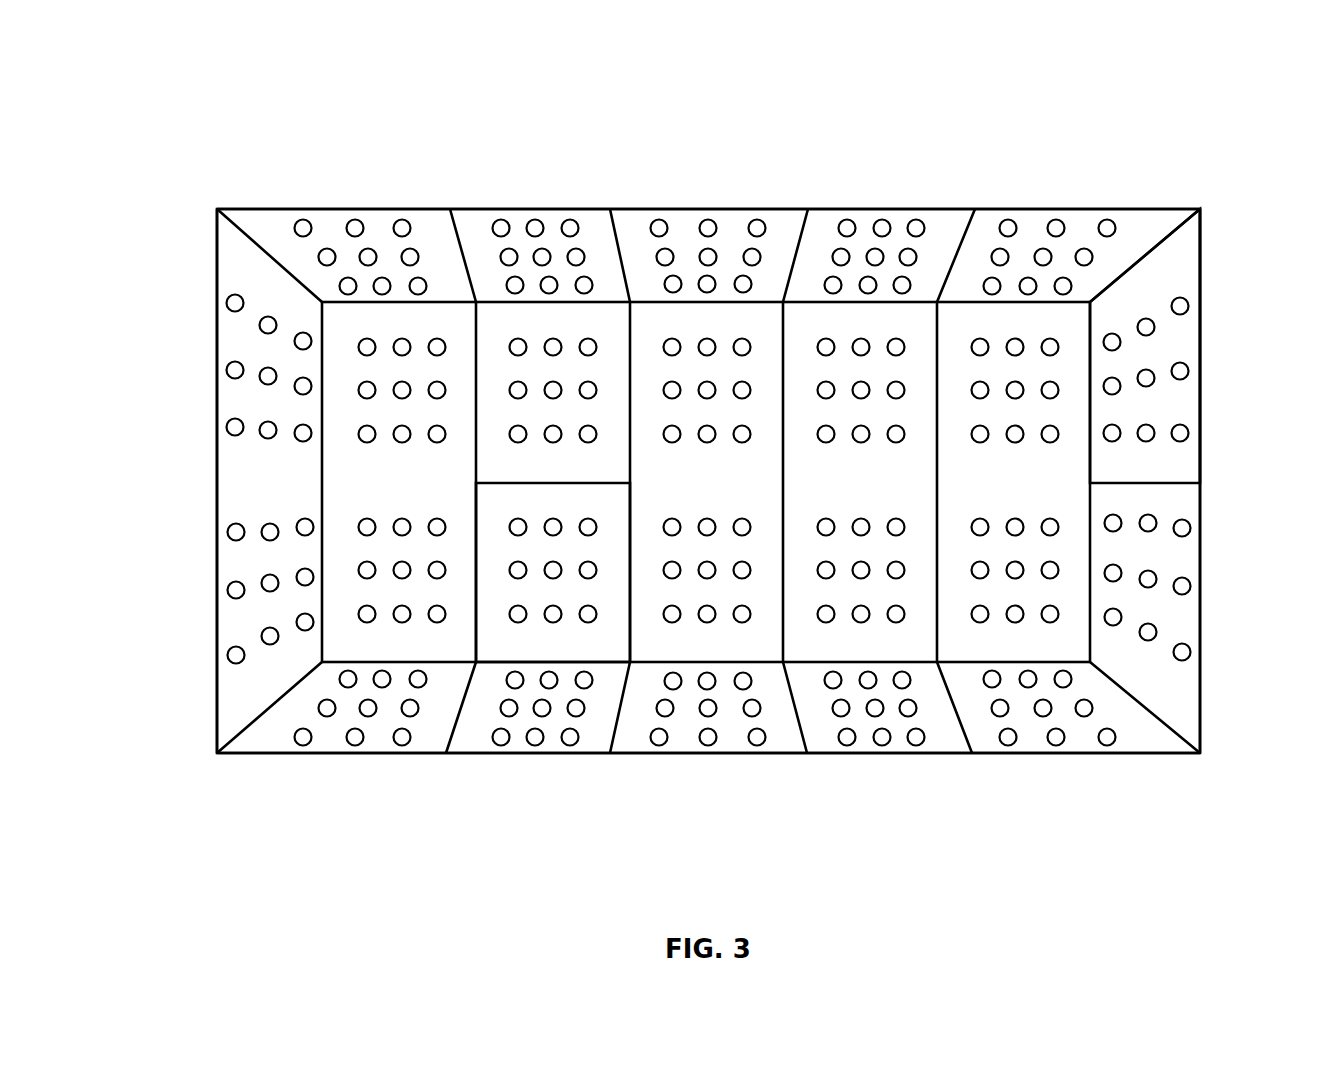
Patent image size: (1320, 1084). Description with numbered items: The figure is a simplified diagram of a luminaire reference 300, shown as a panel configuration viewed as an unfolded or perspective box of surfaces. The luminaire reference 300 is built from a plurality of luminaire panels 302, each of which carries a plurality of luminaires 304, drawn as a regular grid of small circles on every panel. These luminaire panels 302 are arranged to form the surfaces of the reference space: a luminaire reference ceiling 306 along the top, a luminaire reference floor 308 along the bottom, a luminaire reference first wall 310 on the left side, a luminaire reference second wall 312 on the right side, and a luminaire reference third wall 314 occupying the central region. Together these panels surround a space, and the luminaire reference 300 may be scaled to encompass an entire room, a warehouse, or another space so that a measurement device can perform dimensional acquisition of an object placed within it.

The luminaire reference 300 is at (1156, 75).
The luminaire panel 302 is at (1190, 462).
The luminaire 304 is at (1182, 298).
The luminaire reference ceiling 306 is at (697, 206).
The luminaire reference floor 308 is at (707, 764).
The luminaire reference first wall 310 is at (187, 508).
The luminaire reference second wall 312 is at (1215, 513).
The luminaire reference third wall 314 is at (497, 595).